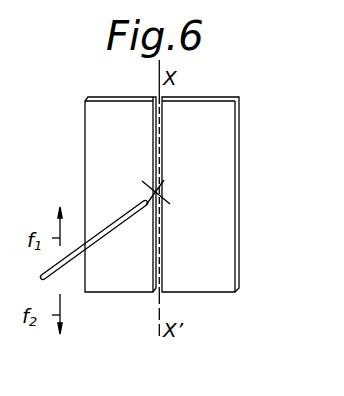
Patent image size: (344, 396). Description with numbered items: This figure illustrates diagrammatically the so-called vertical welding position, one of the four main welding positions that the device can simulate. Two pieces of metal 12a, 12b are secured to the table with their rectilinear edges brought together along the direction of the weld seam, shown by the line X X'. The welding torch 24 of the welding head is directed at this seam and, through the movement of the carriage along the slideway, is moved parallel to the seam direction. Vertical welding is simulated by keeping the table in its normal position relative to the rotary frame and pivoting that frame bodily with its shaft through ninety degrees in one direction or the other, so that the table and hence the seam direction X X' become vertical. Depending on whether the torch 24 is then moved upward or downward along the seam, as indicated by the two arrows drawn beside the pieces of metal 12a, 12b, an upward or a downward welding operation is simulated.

The piece of metal 12a is at (215, 168).
The piece of metal 12b is at (98, 172).
The welding torch 24 is at (108, 233).